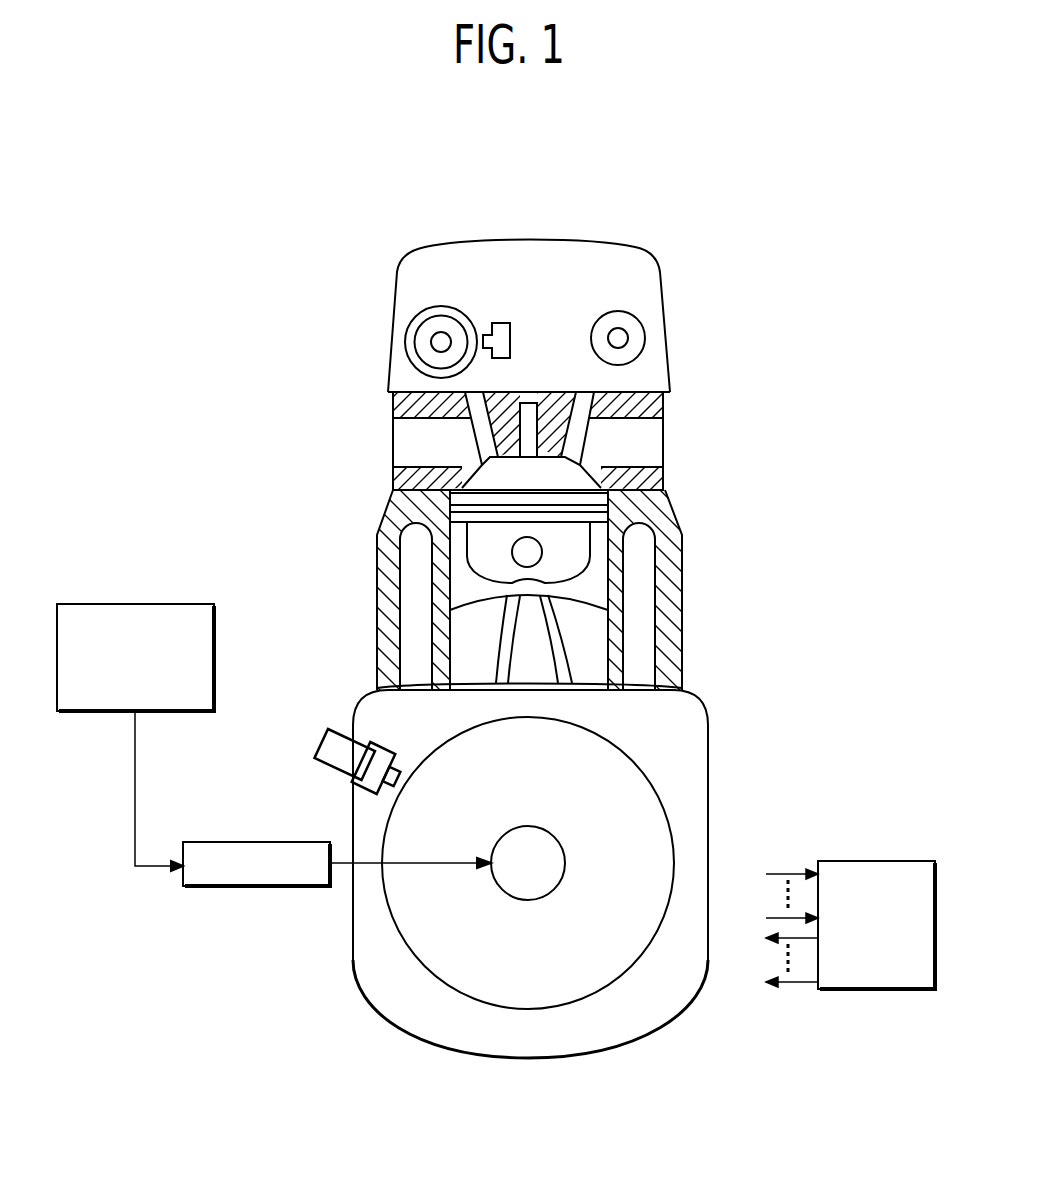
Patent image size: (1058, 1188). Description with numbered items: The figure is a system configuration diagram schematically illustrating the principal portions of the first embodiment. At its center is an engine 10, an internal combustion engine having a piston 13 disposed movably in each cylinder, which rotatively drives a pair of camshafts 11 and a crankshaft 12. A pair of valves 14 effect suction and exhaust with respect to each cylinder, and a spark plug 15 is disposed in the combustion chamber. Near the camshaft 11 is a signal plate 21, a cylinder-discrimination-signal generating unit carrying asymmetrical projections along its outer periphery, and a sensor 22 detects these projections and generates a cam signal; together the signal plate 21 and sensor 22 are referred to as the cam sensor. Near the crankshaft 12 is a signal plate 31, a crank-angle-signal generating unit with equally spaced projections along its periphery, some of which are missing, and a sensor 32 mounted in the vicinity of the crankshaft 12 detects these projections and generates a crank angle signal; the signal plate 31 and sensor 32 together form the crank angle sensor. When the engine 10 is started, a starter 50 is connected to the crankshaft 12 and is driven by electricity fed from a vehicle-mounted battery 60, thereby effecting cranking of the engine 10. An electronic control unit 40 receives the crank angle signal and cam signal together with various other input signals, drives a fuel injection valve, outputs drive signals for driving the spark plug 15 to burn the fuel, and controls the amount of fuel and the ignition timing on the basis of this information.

The engine 10 is at (700, 566).
The camshaft 11 is at (430, 355).
The crankshaft 12 is at (554, 834).
The piston 13 is at (460, 592).
The valve 14 is at (450, 430).
The spark plug 15 is at (528, 428).
The signal plate 21 is at (443, 306).
The sensor 22 is at (500, 323).
The signal plate 31 is at (408, 958).
The sensor 32 is at (333, 766).
The electronic control unit 40 is at (870, 861).
The starter 50 is at (233, 886).
The vehicle-mounted battery 60 is at (130, 604).